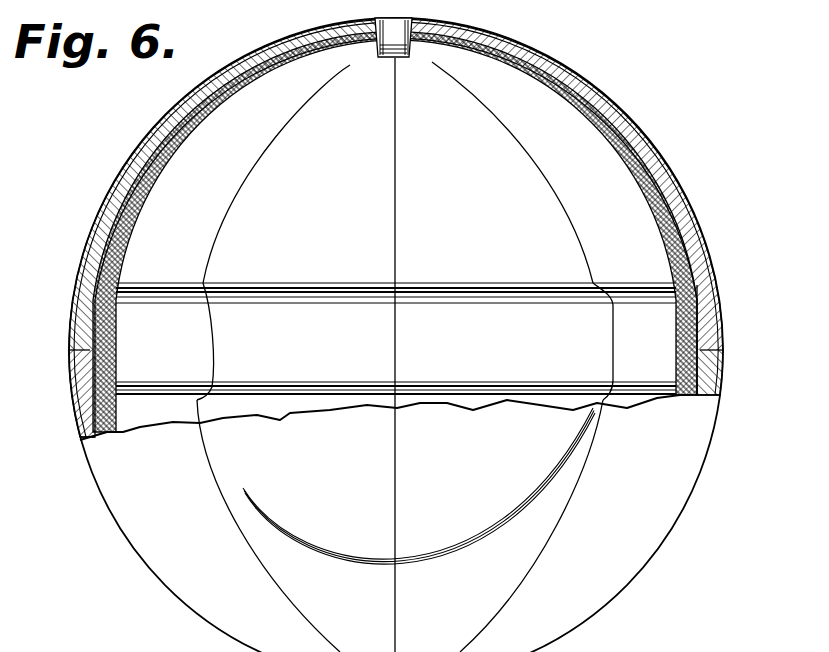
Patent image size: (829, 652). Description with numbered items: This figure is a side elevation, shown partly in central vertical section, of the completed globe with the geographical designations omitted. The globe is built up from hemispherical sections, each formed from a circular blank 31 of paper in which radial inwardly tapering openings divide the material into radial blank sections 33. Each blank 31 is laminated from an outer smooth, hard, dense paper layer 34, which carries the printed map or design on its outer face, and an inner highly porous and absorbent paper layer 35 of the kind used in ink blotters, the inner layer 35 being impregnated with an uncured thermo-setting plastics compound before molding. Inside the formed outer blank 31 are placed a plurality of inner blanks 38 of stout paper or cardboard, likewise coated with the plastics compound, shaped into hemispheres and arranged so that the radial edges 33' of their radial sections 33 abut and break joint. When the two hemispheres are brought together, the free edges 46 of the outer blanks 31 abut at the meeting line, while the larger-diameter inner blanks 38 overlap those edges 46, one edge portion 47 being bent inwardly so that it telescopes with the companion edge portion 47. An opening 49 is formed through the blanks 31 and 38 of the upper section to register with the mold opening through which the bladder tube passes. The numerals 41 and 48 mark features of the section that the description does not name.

The circular blank 31 is at (663, 149).
The radial blank sections 33 is at (419, 355).
The longitudinal or radial edges 33' is at (415, 357).
The outer smooth or hard or dense paper layer 34 is at (620, 110).
The inner highly porous and absorbent paper layer 35 is at (632, 137).
The inner blanks 38 is at (183, 146).
The bushing 41 is at (680, 350).
The free edges 46 is at (711, 370).
The edge portion 47 is at (713, 312).
The tube 48 is at (565, 324).
The opening 49 is at (397, 58).